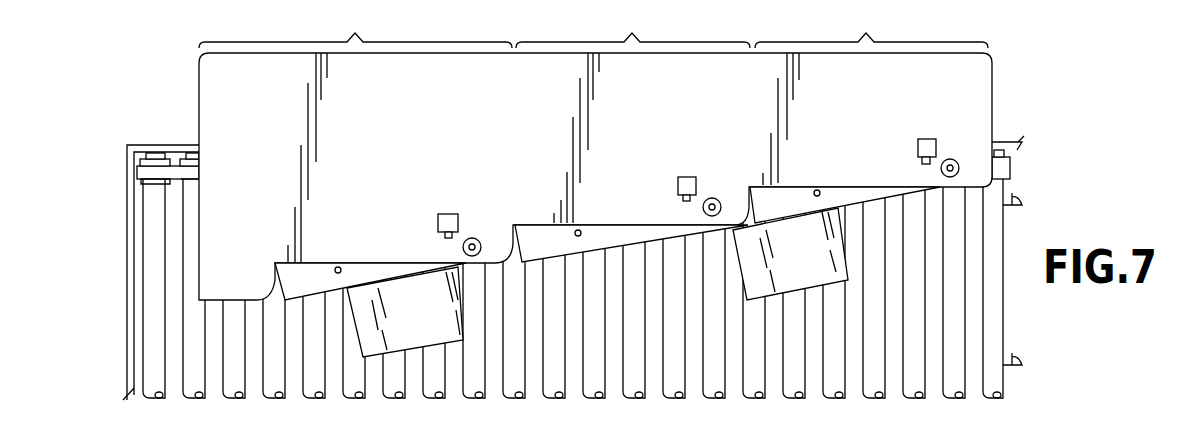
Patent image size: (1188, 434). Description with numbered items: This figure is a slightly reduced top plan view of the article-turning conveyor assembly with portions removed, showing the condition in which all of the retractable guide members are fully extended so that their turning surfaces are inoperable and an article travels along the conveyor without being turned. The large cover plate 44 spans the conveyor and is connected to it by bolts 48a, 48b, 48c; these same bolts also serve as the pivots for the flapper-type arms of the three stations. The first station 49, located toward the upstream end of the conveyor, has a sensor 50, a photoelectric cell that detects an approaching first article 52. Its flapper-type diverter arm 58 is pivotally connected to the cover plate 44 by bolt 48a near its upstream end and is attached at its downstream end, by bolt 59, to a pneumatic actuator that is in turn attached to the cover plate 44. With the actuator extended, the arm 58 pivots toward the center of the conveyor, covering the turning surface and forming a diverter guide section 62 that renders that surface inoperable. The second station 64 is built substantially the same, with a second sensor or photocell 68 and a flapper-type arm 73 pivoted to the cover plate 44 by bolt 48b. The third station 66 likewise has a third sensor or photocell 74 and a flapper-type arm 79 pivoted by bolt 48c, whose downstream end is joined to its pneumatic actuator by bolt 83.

The cover plate 44 is at (205, 91).
The third station 66 is at (355, 135).
The second station 64 is at (633, 115).
The first station 49 is at (871, 96).
The flapper-type arm 79 is at (380, 266).
The bolt 83 is at (338, 267).
The article 52 is at (424, 326).
The flapper-type arm 73 is at (625, 226).
The flapper-type diverter arm 58 is at (867, 190).
The bolt 59 is at (816, 190).
The diverter guide section 62 is at (872, 214).
The third sensor or photocell 74 is at (443, 213).
The second sensor or photocell 68 is at (683, 177).
The sensor 50 is at (921, 139).
The bolt 48a is at (951, 159).
The bolt 48b is at (712, 198).
The bolt 48c is at (473, 238).